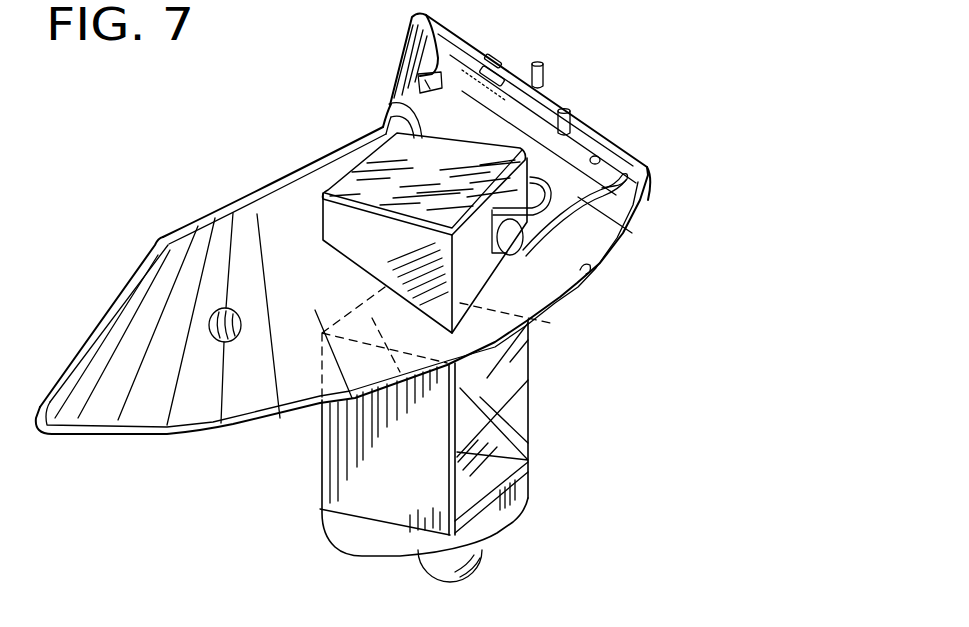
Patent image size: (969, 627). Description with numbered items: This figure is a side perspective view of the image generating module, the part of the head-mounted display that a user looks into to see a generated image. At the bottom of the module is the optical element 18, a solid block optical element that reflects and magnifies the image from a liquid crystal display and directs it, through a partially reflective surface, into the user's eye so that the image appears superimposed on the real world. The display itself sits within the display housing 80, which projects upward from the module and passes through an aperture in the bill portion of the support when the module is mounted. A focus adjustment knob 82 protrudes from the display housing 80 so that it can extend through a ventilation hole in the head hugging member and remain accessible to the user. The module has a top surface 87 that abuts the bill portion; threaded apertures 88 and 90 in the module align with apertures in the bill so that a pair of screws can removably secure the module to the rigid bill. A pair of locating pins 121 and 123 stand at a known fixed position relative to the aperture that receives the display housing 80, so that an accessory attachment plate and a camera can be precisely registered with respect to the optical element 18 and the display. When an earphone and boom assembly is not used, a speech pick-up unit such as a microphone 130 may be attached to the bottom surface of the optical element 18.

The optical element 18 is at (520, 406).
The display housing 80 is at (358, 237).
The focus adjustment knob 82 is at (518, 243).
The top surface 87 is at (278, 228).
The threaded aperture 88 is at (228, 342).
The threaded aperture 90 is at (586, 84).
The locating pin 121 is at (543, 62).
The locating pin 123 is at (572, 127).
The microphone 130 is at (483, 564).